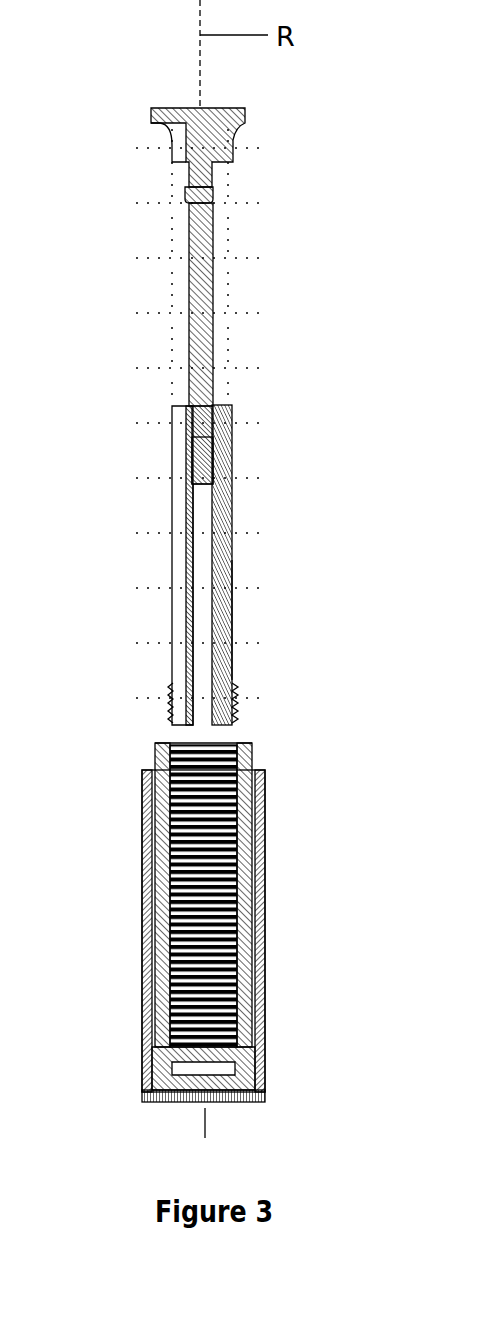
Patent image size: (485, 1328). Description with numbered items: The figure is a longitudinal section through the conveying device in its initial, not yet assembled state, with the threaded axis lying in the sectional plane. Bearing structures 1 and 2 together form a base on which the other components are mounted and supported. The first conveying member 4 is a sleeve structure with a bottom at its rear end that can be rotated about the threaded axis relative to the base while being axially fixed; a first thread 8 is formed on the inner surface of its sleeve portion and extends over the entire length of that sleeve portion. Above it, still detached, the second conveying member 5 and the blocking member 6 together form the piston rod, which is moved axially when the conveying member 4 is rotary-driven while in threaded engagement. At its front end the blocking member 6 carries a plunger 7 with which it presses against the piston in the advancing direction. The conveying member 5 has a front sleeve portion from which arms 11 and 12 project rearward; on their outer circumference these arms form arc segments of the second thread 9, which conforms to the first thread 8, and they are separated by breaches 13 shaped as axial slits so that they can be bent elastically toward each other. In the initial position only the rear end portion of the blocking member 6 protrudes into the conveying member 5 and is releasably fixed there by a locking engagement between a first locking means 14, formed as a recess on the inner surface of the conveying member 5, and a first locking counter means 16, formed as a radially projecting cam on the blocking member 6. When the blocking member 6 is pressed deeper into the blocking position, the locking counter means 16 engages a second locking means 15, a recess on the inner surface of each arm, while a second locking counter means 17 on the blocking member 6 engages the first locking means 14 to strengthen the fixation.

The bearing structure 1 is at (265, 988).
The bearing structure 2 is at (265, 1095).
The first conveying member 4 is at (252, 755).
The second conveying member 5 is at (230, 542).
The blocking member 6 is at (213, 342).
The plunger 7 is at (243, 118).
The first thread 8 is at (238, 863).
The second thread 9 is at (242, 703).
The arm 11 is at (178, 605).
The arm 12 is at (232, 625).
The breach 13 is at (203, 654).
The first locking means 14 is at (192, 437).
The second locking means 15 is at (212, 686).
The first locking counter means 16 is at (154, 453).
The second locking counter means 17 is at (214, 195).